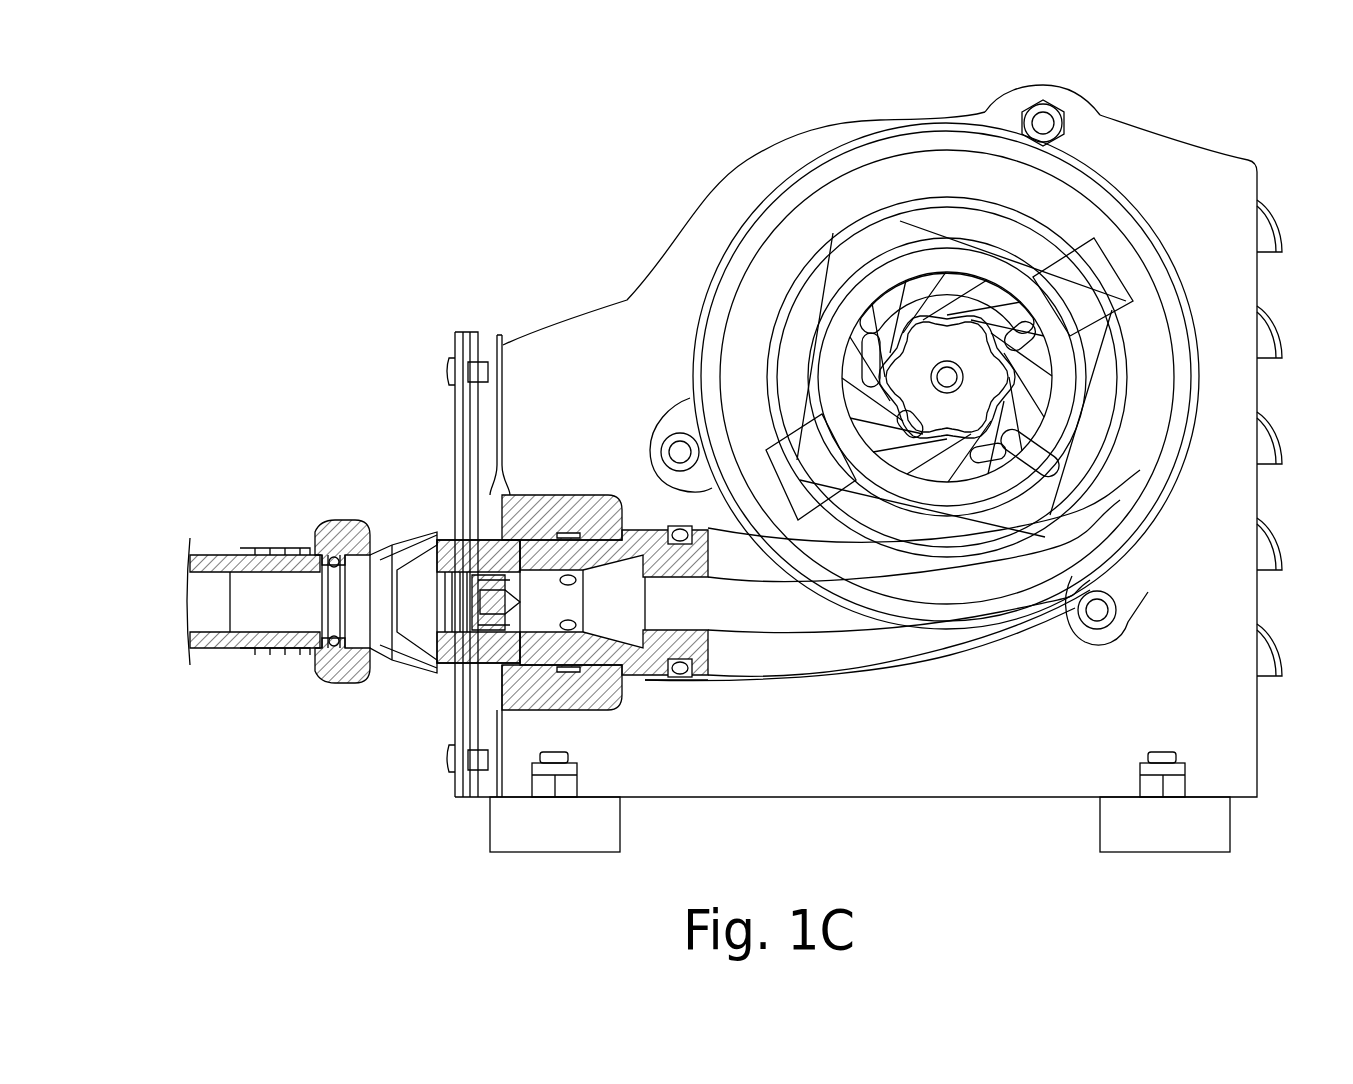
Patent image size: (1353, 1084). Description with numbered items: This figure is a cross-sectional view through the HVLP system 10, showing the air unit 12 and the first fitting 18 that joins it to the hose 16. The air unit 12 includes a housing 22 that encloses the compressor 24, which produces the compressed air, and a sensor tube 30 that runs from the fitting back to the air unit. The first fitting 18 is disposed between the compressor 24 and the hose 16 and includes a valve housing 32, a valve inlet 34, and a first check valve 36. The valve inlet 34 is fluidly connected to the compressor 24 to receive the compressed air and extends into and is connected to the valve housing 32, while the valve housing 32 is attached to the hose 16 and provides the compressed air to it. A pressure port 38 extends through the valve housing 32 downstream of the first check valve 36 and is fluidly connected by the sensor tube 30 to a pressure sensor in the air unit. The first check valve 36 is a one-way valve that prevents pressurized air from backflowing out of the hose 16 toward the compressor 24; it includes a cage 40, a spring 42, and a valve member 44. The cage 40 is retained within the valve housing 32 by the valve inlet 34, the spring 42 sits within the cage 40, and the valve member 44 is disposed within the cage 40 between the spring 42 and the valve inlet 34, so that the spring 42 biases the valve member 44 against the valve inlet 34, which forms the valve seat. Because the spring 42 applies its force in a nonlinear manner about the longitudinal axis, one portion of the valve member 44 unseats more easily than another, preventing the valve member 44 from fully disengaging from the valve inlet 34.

The HVLP system 10 is at (630, 220).
The air unit 12 is at (655, 368).
The hose 16 is at (216, 556).
The first fitting 18 is at (425, 504).
The housing 22 is at (854, 118).
The compressor 24 is at (832, 265).
The sensor tube 30 is at (504, 355).
The valve housing 32 is at (400, 676).
The valve inlet 34 is at (584, 700).
The first check valve 36 is at (552, 597).
The pressure port 38 is at (458, 500).
The cage 40 is at (452, 665).
The spring 42 is at (440, 556).
The valve member 44 is at (506, 704).